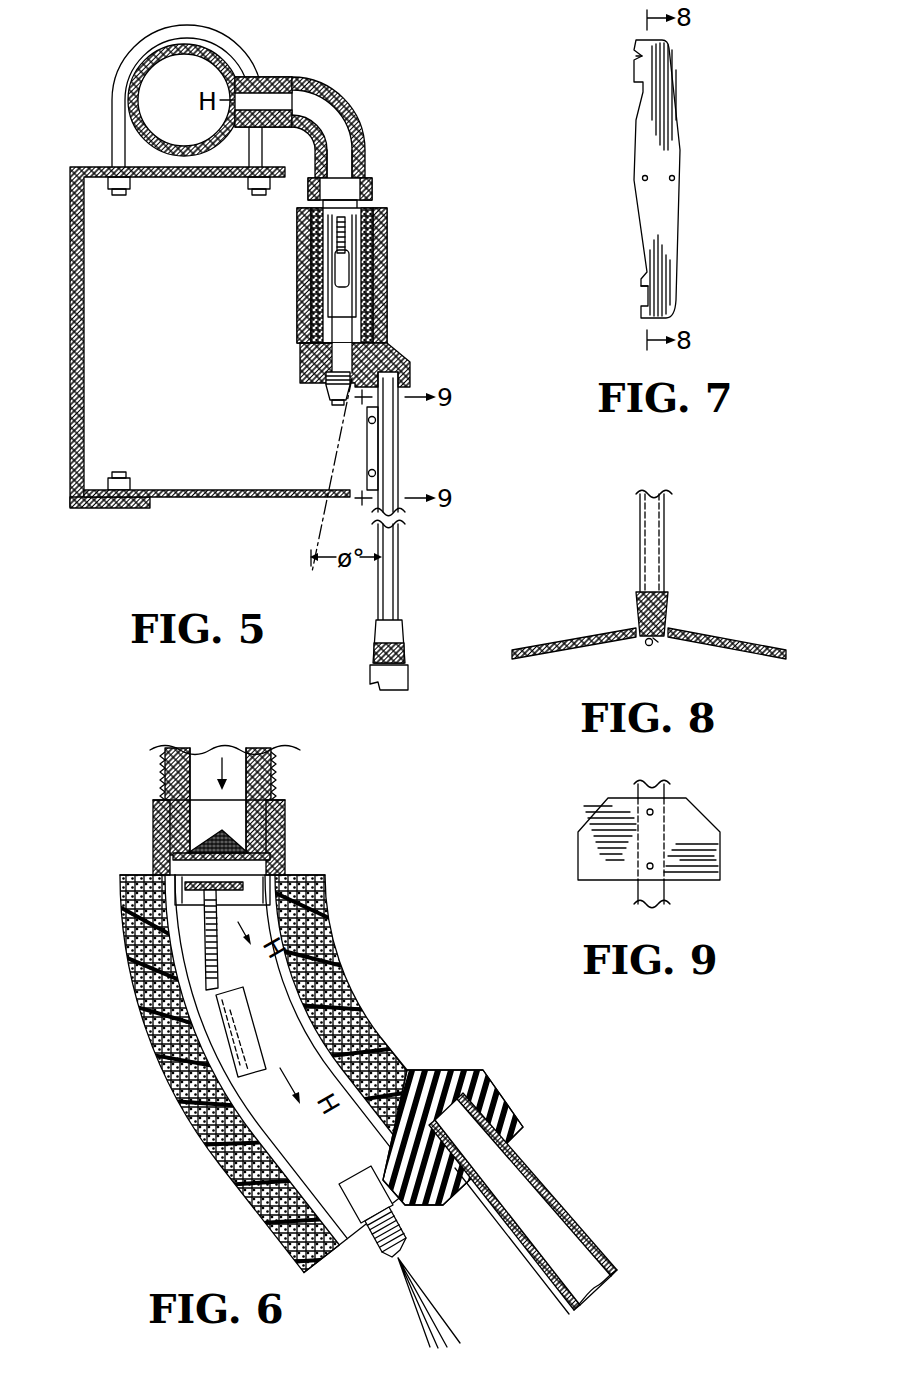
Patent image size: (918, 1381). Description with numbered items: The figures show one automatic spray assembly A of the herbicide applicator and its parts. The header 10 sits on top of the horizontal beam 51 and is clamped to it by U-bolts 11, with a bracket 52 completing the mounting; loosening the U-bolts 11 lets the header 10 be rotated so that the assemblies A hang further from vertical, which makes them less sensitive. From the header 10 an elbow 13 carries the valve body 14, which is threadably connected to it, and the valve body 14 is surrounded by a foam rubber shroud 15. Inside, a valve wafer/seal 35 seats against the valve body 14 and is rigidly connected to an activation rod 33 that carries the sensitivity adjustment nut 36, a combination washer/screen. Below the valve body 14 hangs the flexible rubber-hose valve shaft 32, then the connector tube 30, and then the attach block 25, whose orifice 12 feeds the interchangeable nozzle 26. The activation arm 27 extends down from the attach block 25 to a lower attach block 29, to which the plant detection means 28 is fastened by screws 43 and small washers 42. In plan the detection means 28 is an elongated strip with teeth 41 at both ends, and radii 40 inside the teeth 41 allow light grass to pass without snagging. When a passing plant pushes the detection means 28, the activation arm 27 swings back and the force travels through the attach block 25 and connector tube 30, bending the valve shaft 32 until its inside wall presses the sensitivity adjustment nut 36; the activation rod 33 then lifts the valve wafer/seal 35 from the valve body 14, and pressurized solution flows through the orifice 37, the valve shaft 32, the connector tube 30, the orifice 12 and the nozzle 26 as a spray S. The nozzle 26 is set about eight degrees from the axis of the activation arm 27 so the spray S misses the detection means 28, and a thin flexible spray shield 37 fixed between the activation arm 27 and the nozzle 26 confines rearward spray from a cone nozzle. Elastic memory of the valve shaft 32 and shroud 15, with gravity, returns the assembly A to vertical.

In FIG. 5, the header 10 is at (215, 45).
In FIG. 5, the U-bolts 11 is at (125, 62).
In FIG. 5, the attach block orifice 12 is at (330, 383).
In FIG. 6, the attach block orifice 12 is at (307, 1210).
In FIG. 5, the elbow 13 is at (340, 78).
In FIG. 6, the elbow 13 is at (277, 757).
In FIG. 5, the valve body 14 is at (372, 186).
In FIG. 6, the valve body 14 is at (286, 812).
In FIG. 5, the foam rubber shroud 15 is at (386, 242).
In FIG. 6, the foam rubber shroud 15 is at (322, 895).
In FIG. 5, the attach block 25 is at (400, 352).
In FIG. 6, the attach block 25 is at (428, 1072).
In FIG. 5, the nozzle 26 is at (336, 398).
In FIG. 6, the nozzle 26 is at (380, 1258).
In FIG. 5, the activation arm 27 is at (400, 562).
In FIG. 8, the activation arm 27 is at (665, 540).
In FIG. 9, the activation arm 27 is at (664, 792).
In FIG. 6, the activation arm 27 is at (570, 1213).
In FIG. 5, the plant detection means 28 is at (400, 688).
In FIG. 7, the plant detection means 28 is at (681, 177).
In FIG. 8, the plant detection means 28 is at (606, 630).
In FIG. 5, the attach block 29 is at (404, 640).
In FIG. 8, the attach block 29 is at (666, 618).
In FIG. 5, the connector tube 30 is at (318, 366).
In FIG. 6, the connector tube 30 is at (310, 1060).
In FIG. 5, the flexible valve shaft 32 is at (386, 292).
In FIG. 6, the flexible valve shaft 32 is at (210, 1112).
In FIG. 6, the activation rod 33 is at (222, 980).
In FIG. 6, the valve wafer/seal 35 is at (250, 882).
In FIG. 6, the sensitivity adjustment nut 36 is at (268, 858).
In FIG. 5, the orifice / spray shield 37 is at (368, 445).
In FIG. 9, the orifice / spray shield 37 is at (721, 858).
In FIG. 6, the orifice / spray shield 37 is at (133, 950).
In FIG. 7, the radii 40 is at (640, 85).
In FIG. 7, the teeth 41 is at (640, 305).
In FIG. 8, the washers 42 is at (645, 644).
In FIG. 8, the screws 43 is at (657, 644).
In FIG. 5, the horizontal beam 51 is at (86, 278).
In FIG. 5, the housing bottom flange 52 is at (270, 498).
In FIG. 5, the automatic spray assembly A is at (427, 113).
In FIG. 6, the spray S is at (420, 1323).